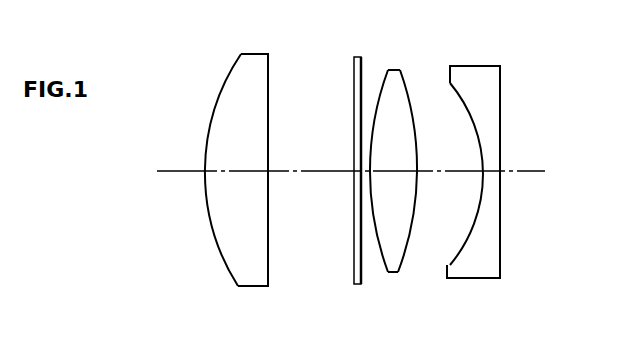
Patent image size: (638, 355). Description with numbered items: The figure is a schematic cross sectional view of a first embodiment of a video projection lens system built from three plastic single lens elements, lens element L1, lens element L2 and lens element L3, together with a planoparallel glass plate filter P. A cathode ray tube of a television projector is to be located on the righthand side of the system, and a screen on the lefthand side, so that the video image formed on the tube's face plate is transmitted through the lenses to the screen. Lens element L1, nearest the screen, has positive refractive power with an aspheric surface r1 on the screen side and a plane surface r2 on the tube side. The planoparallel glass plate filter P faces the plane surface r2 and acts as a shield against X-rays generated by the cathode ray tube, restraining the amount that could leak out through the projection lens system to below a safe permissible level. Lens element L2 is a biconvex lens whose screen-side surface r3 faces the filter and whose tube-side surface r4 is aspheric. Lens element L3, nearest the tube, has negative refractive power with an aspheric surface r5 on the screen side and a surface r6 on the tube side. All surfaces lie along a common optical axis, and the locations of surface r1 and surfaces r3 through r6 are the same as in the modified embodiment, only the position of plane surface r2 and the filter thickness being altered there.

The lens element L1 is at (243, 163).
The lens element L2 is at (384, 164).
The lens element L3 is at (483, 165).
The planoparallel glass plate filter P is at (355, 285).
The aspheric surface r1 is at (233, 67).
The plane surface r2 is at (279, 143).
The surface r3 is at (381, 88).
The aspheric surface r4 is at (407, 138).
The aspheric surface r5 is at (457, 95).
The surface r6 is at (482, 292).